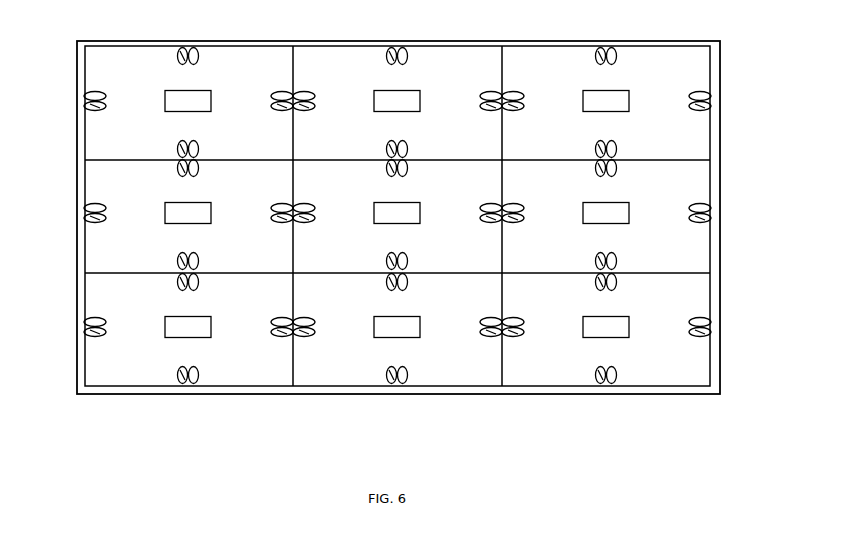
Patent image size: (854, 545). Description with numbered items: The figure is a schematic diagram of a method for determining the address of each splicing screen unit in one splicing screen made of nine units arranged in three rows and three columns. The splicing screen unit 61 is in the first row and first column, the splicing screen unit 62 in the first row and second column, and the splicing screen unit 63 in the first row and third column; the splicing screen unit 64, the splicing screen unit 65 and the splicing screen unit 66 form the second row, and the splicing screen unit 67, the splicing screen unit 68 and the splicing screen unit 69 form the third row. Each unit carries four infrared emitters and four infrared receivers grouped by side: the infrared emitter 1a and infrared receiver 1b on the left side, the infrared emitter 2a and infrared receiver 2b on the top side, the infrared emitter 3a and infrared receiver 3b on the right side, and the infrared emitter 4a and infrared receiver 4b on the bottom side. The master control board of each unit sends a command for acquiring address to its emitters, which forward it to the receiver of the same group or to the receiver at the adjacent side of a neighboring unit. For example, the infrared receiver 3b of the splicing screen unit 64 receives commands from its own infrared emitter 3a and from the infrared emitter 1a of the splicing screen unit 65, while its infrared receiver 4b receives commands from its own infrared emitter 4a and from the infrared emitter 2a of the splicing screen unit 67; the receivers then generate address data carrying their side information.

The infrared emitter 1a is at (315, 227).
The infrared receiver 1b is at (316, 201).
The infrared emitter 2a is at (373, 174).
The infrared receiver 2b is at (418, 174).
The infrared emitter 3a is at (480, 233).
The infrared receiver 3b is at (479, 197).
The infrared emitter 4a is at (373, 257).
The infrared receiver 4b is at (421, 257).
The splicing screen unit 61 is at (243, 60).
The splicing screen unit 62 is at (440, 60).
The splicing screen unit 63 is at (655, 66).
The splicing screen unit 64 is at (98, 250).
The splicing screen unit 65 is at (397, 222).
The splicing screen unit 66 is at (695, 253).
The splicing screen unit 67 is at (268, 370).
The splicing screen unit 68 is at (482, 372).
The splicing screen unit 69 is at (682, 372).